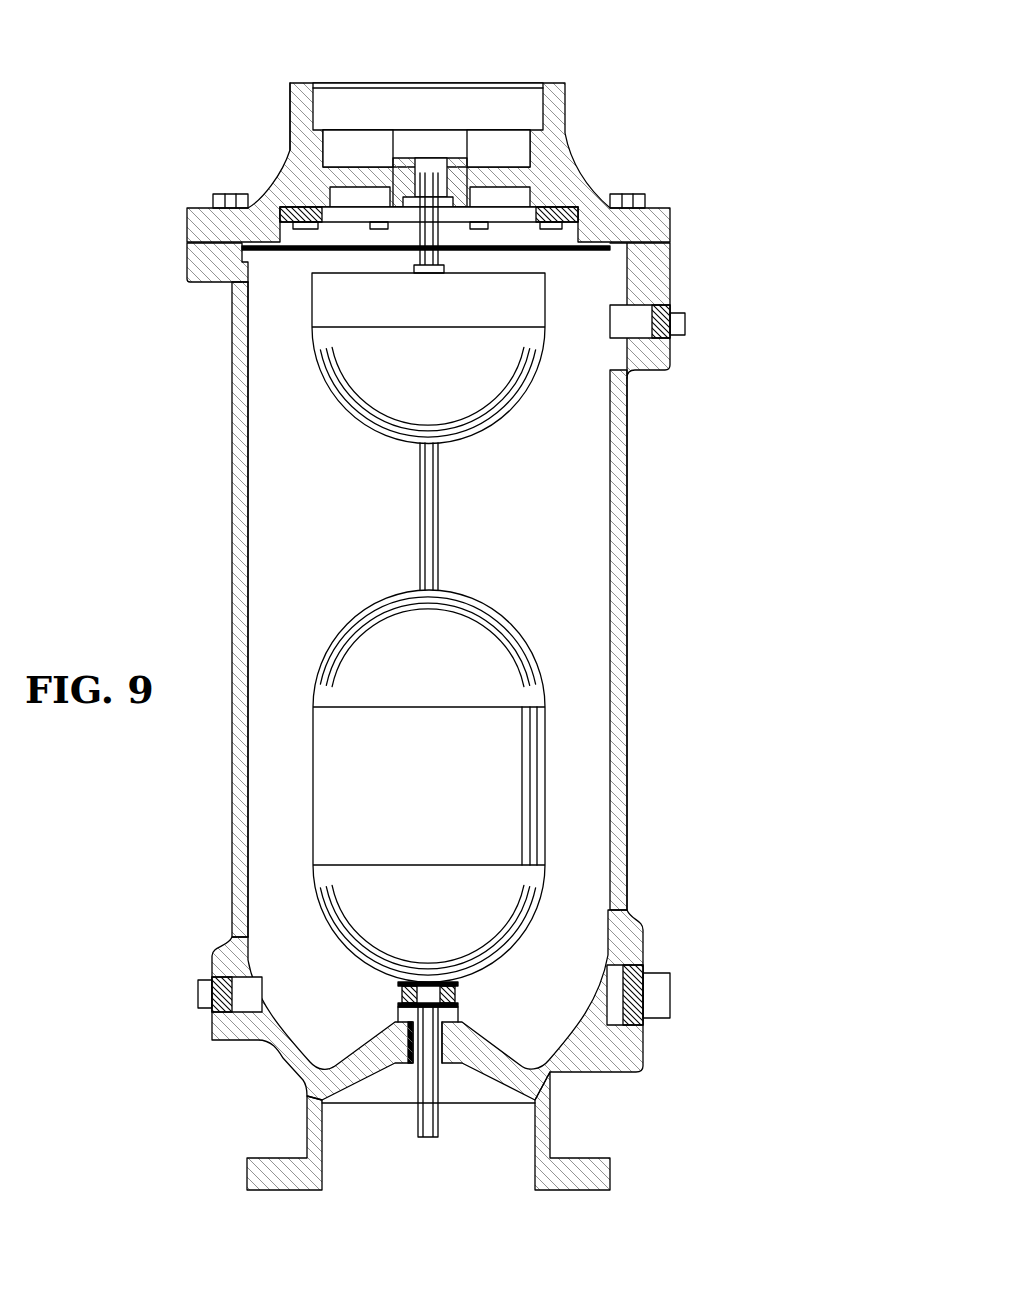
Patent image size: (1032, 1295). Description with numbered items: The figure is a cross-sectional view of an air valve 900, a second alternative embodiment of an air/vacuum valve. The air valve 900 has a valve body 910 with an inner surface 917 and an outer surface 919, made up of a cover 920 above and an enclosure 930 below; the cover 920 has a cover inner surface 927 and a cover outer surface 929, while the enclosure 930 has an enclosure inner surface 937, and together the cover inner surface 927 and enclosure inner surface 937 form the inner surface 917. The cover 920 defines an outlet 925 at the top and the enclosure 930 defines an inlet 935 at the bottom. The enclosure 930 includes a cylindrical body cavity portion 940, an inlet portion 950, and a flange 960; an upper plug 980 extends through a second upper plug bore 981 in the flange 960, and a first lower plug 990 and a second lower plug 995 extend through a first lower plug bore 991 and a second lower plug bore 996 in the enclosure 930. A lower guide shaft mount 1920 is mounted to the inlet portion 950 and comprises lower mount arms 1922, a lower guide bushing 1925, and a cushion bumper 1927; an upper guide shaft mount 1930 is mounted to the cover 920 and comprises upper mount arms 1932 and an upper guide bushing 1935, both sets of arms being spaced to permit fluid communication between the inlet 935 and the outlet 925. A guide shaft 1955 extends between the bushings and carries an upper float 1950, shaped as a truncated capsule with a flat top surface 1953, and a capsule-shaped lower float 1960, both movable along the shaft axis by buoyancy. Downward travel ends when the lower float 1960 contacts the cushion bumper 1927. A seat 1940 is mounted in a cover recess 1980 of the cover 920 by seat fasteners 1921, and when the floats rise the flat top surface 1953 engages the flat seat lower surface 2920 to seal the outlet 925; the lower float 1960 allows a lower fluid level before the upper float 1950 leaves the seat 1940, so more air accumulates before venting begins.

The air valve 900 is at (603, 52).
The valve body 910 is at (229, 565).
The inner surface 917 is at (469, 388).
The outer surface 919 is at (631, 625).
The cover 920 is at (560, 113).
The outlet 925 is at (512, 82).
The cover inner surface 927 is at (264, 228).
The cover outer surface 929 is at (286, 105).
The enclosure 930 is at (232, 632).
The inlet 935 is at (467, 1190).
The enclosure inner surface 937 is at (255, 538).
The body cavity portion 940 is at (630, 508).
The inlet portion 950 is at (558, 1130).
The flange 960 is at (673, 282).
The upper plug 980 is at (688, 323).
The second upper plug bore 981 is at (660, 338).
The first lower plug 990 is at (672, 1000).
The first lower plug bore 991 is at (632, 968).
The second lower plug 995 is at (200, 995).
The second lower plug bore 996 is at (228, 1016).
The lower guide shaft mount 1920 is at (540, 1082).
The seat fasteners 1921 is at (310, 252).
The lower mount arms 1922 is at (347, 1070).
The lower guide bushing 1925 is at (466, 1012).
The cushion bumper 1927 is at (500, 978).
The upper guide shaft mount 1930 is at (500, 165).
The upper mount arms 1932 is at (377, 172).
The upper guide bushing 1935 is at (400, 203).
The seat 1940 is at (568, 206).
The upper float 1950 is at (370, 398).
The flat top surface 1953 is at (376, 263).
The guide shaft 1955 is at (435, 532).
The lower float 1960 is at (520, 755).
The cover recess 1980 is at (298, 210).
The seat lower surface 2920 is at (574, 230).